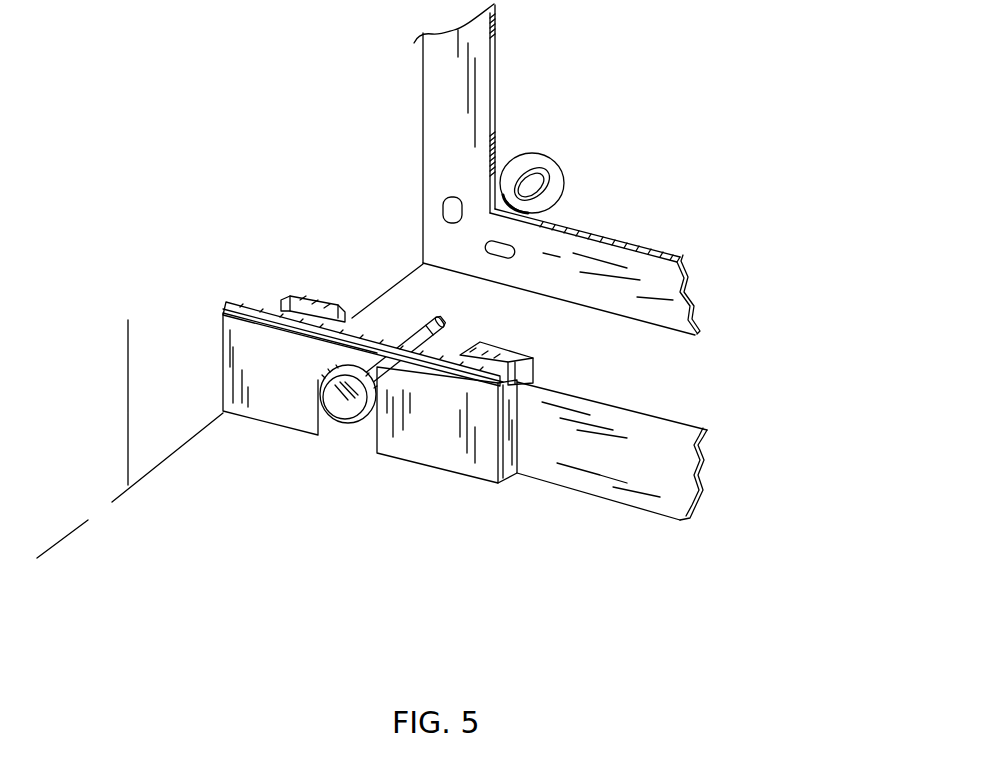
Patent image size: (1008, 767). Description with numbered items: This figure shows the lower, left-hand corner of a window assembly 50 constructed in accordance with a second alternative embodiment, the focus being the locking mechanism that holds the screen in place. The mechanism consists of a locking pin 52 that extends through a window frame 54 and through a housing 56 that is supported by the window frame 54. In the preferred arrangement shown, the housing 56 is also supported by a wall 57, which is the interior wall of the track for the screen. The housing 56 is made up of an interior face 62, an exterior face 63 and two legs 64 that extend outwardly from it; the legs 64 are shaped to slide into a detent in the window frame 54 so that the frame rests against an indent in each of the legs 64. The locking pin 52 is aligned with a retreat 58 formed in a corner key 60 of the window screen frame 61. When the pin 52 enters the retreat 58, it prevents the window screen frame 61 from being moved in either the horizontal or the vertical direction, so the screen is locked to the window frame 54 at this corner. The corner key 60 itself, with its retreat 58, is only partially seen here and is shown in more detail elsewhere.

The window assembly 50 is at (627, 169).
The locking pin 52 is at (452, 314).
The window frame 54 is at (230, 304).
The housing 56 is at (268, 460).
The wall 57 is at (600, 485).
The retreat 58 is at (512, 248).
The corner key 60 is at (523, 169).
The window screen frame 61 is at (438, 130).
The interior face 62 is at (422, 450).
The exterior face 63 is at (366, 320).
The legs 64 is at (310, 308).